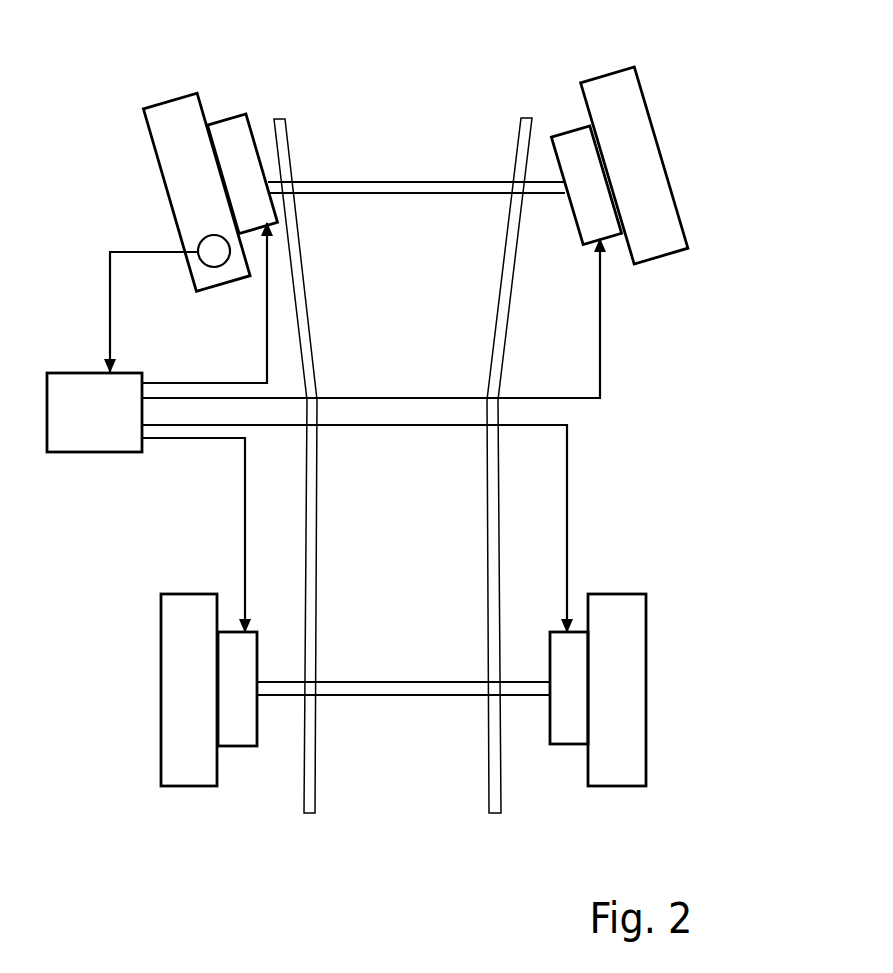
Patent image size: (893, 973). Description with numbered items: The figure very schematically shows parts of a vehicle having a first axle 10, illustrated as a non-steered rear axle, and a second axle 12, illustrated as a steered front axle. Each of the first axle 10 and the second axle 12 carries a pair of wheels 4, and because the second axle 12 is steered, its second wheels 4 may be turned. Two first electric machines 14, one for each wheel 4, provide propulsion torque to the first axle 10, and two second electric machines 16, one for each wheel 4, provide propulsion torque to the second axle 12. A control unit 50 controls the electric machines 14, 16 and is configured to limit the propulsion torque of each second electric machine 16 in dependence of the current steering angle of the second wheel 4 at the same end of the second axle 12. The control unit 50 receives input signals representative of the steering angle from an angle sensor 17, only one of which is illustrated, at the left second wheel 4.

The wheel 4 is at (163, 204).
The first axle 10 is at (407, 696).
The second axle 12 is at (407, 181).
The first electric machine 14 is at (237, 747).
The second electric machine 16 is at (227, 117).
The angle sensor 17 is at (212, 267).
The control unit 50 is at (323, 427).